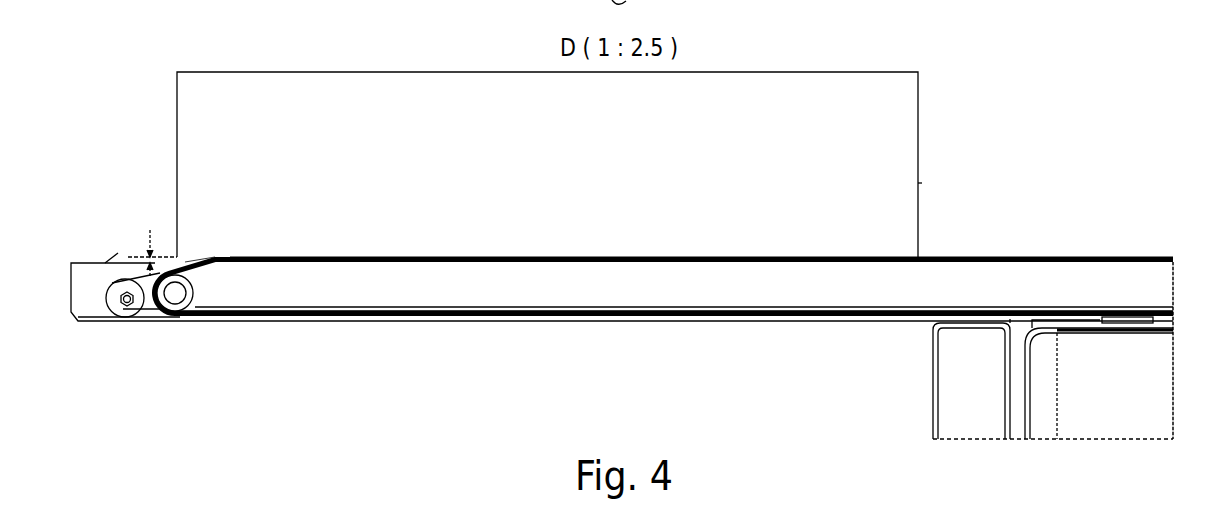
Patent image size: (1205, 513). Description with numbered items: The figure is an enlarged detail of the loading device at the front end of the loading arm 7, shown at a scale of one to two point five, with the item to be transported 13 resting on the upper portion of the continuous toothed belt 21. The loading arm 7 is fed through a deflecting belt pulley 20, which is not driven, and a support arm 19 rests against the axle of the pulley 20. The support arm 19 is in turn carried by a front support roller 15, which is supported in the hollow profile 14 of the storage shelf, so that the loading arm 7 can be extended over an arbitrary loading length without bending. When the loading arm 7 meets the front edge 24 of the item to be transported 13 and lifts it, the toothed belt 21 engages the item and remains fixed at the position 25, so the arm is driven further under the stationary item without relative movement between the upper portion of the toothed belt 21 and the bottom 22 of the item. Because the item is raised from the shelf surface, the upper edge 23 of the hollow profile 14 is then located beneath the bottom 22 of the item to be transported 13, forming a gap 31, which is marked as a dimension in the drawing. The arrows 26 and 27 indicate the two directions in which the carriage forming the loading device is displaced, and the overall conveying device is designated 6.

The conveyor device 6 is at (1087, 276).
The loading arm 7 is at (263, 290).
The item to be transported 13 is at (882, 122).
The hollow profile 14 is at (88, 282).
The front support roller 15 is at (127, 311).
The support arm 19 is at (147, 299).
The deflecting belt pulley 20 is at (203, 303).
The toothed belt 21 is at (405, 316).
The bottom of the item to be transported 22 is at (187, 257).
The upper edge of the hollow profile 23 is at (106, 263).
The front edge 24 is at (922, 183).
The position 25 is at (893, 258).
The arrow 26 is at (600, 257).
The arrow 27 is at (730, 320).
The gap 31 is at (152, 252).